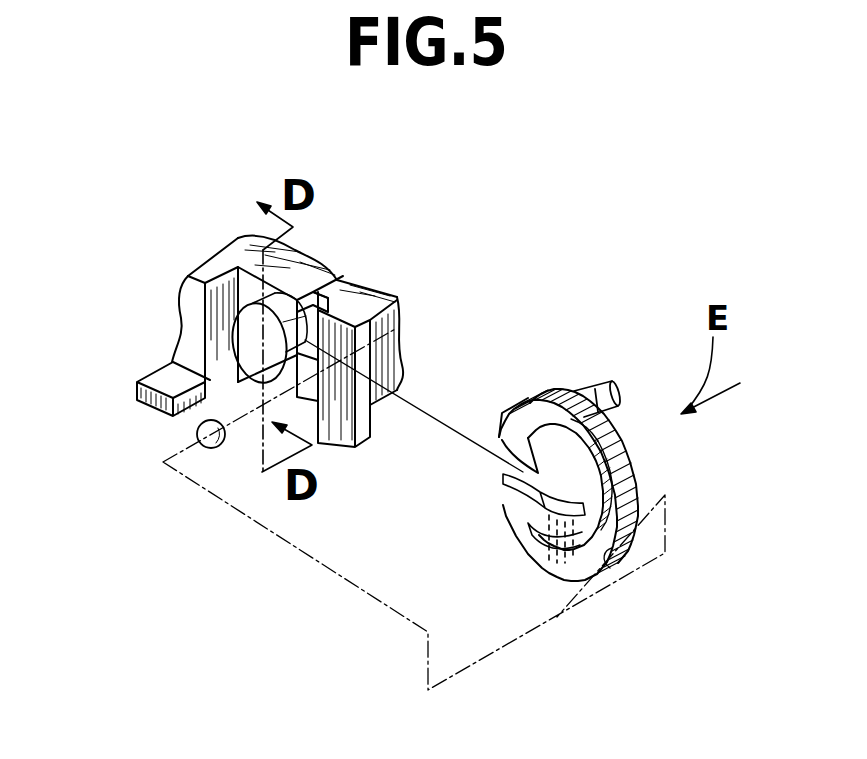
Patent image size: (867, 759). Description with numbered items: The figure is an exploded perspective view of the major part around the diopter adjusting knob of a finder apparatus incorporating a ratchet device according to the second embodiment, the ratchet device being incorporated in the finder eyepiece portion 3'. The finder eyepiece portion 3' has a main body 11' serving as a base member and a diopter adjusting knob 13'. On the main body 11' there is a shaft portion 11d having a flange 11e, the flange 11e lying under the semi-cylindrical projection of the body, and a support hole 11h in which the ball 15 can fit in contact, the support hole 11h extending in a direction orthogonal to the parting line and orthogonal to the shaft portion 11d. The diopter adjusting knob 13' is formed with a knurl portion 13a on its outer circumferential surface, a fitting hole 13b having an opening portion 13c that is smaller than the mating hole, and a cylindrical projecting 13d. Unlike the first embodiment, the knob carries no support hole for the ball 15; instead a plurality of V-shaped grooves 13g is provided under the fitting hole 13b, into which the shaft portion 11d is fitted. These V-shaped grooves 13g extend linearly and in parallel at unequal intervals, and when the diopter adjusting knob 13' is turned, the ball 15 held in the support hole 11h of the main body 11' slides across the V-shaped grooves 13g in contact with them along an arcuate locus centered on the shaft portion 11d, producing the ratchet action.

The finder eyepiece portion 3' is at (414, 404).
The main body 11' is at (323, 327).
The shaft portion 11d is at (307, 307).
The flange 11e is at (243, 323).
The support hole 11h is at (319, 372).
The ball 15 is at (197, 433).
The diopter adjusting knob 13' is at (627, 516).
The knurl portion 13a is at (627, 463).
The fitting hole 13b is at (540, 505).
The opening portion 13c is at (545, 493).
The cylindrical projecting 13d is at (597, 388).
The V-shaped grooves 13g is at (566, 560).